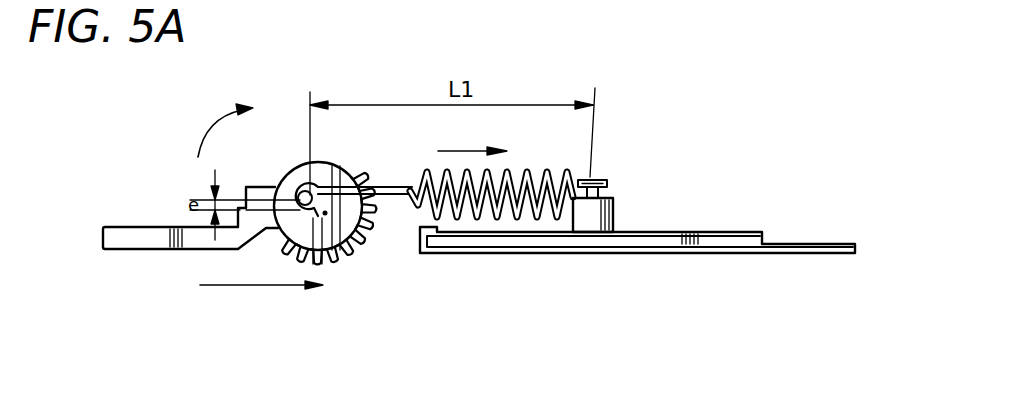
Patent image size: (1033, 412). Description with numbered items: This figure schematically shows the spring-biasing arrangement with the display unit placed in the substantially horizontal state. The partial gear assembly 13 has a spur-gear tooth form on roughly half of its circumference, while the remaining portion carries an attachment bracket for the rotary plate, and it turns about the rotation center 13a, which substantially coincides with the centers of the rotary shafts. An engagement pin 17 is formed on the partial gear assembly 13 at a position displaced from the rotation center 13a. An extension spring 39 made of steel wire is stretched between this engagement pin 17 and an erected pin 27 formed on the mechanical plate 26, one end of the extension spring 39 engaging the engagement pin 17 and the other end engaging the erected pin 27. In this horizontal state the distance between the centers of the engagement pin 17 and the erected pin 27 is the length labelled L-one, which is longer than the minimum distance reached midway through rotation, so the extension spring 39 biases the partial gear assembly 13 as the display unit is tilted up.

The partial gear assembly 13 is at (150, 238).
The rotation center 13a is at (362, 248).
The engagement pin 17 is at (303, 190).
The extension spring 39 is at (500, 220).
The erected pin 27 is at (612, 203).
The mechanical plate 26 is at (662, 255).